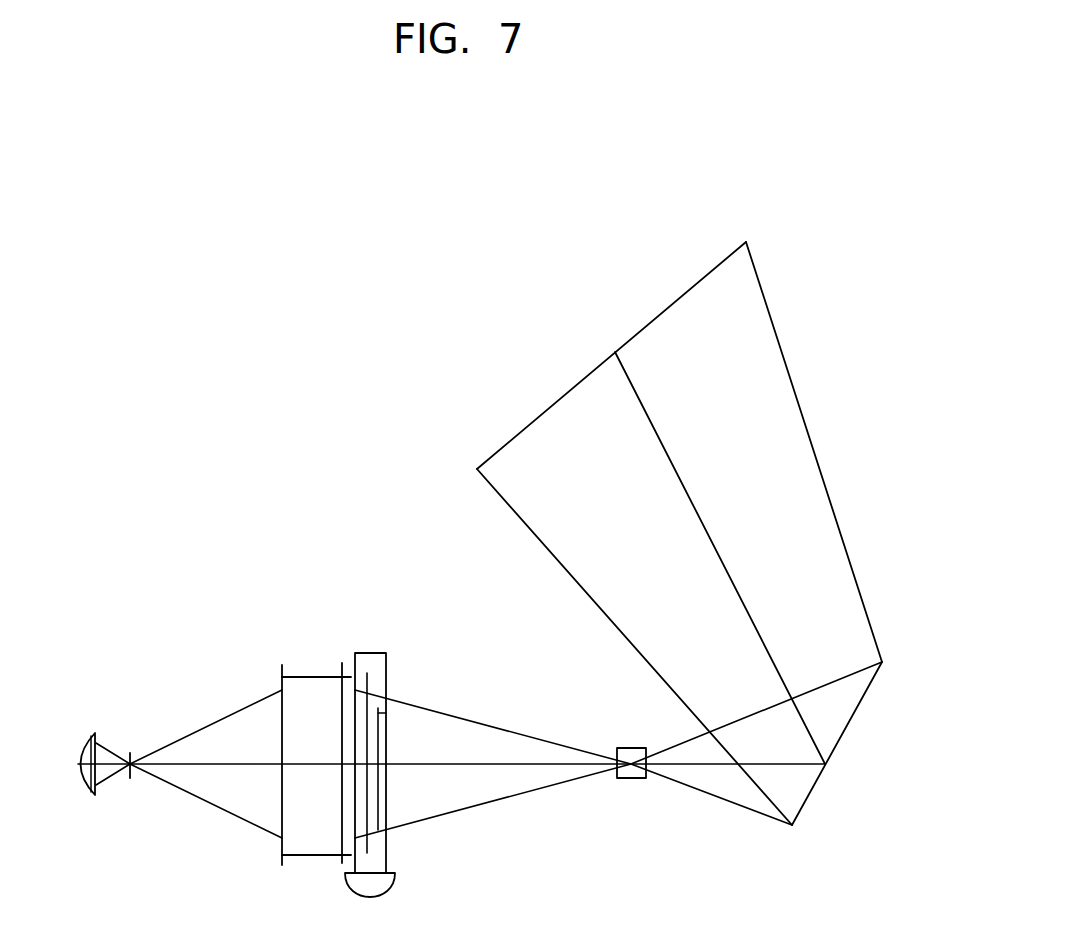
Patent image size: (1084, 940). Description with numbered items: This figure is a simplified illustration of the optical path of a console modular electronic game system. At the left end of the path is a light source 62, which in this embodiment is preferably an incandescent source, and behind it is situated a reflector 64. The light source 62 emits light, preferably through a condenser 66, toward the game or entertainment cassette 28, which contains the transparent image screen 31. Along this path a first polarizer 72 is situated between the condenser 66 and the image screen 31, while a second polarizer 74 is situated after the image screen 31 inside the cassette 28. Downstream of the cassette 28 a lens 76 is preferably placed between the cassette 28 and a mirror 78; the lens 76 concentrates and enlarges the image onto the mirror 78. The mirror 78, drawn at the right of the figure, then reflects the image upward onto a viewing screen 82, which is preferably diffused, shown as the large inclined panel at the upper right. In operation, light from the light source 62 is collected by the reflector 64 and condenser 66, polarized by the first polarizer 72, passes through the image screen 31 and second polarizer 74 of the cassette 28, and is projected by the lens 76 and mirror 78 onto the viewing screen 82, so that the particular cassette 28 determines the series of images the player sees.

The game or entertainment cassette 28 is at (400, 655).
The transparent image screen 31 is at (369, 838).
The light source 62 is at (131, 752).
The reflector 64 is at (86, 737).
The condenser 66 is at (311, 675).
The first polarizer 72 is at (332, 676).
The second polarizer 74 is at (380, 713).
The lens 76 is at (641, 747).
The mirror 78 is at (818, 784).
The viewing screen 82 is at (617, 349).